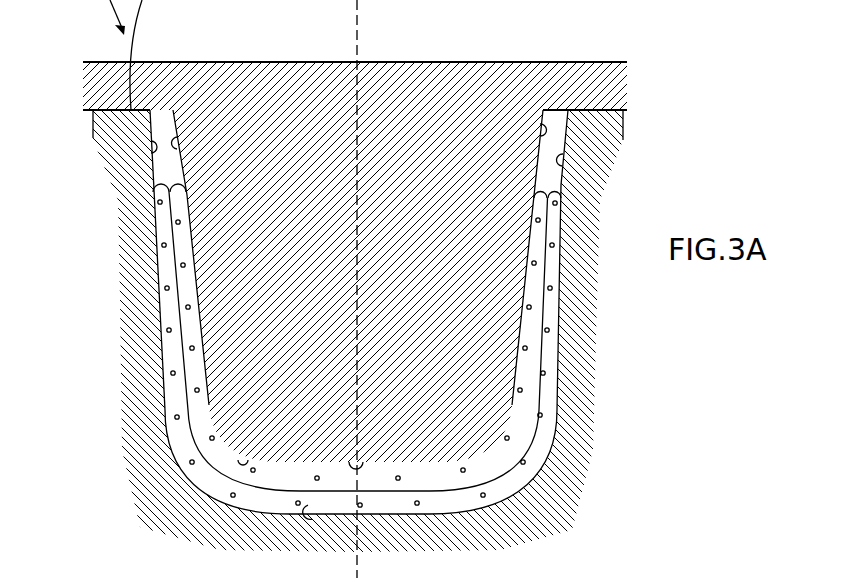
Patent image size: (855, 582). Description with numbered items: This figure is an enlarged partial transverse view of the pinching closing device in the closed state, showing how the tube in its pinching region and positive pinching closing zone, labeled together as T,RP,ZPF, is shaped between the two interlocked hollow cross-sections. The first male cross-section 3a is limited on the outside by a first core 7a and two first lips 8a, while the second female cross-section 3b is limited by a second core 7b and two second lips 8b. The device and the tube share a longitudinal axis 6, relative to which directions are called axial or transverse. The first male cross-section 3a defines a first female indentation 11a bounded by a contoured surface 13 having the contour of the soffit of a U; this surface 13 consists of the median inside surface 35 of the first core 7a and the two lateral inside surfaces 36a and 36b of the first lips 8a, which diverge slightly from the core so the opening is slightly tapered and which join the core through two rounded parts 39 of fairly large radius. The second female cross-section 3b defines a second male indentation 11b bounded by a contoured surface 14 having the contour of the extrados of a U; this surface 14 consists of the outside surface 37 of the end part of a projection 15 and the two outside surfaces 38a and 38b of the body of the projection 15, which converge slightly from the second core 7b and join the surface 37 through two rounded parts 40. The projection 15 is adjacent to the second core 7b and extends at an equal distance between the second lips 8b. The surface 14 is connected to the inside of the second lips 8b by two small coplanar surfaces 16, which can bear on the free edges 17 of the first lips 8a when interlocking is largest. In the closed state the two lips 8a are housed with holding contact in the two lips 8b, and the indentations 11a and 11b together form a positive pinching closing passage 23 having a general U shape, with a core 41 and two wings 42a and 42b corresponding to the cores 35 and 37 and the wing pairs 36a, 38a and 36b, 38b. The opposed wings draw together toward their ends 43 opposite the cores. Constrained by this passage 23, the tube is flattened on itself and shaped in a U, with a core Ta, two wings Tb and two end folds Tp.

The first male cross-section 3a is at (187, 502).
The second female cross-section 3b is at (355, 262).
The longitudinal axis 6 is at (355, 262).
The first core 7a is at (338, 537).
The second core 7b is at (431, 100).
The first lips 8a is at (148, 382).
The second lips 8b is at (115, 75).
The first female indentation 11a is at (220, 507).
The second male indentation 11b is at (340, 423).
The contoured surface 13 is at (310, 510).
The contoured surface 14 is at (252, 458).
The projection 15 is at (338, 289).
The small surfaces 16 is at (157, 110).
The free edges 17 is at (598, 110).
The positive pinching closing passage 23 is at (550, 305).
The inside surface of the first core 35 is at (352, 480).
The inside surface of first lip 36a is at (150, 150).
The inside surface of first lip 36b is at (563, 163).
The outside surface of the projection end part 37 is at (370, 462).
The outside surface of projection body 38a is at (175, 142).
The outside surface of projection body 38b is at (541, 132).
The rounded parts 39 is at (183, 473).
The rounded parts 40 is at (218, 443).
The core of the pinching passage 41 is at (350, 480).
The wing of the pinching passage 42a is at (165, 313).
The wing of the pinching passage 42b is at (553, 322).
The ends of the wings 43 is at (153, 185).
The core of the tube Ta is at (268, 505).
The wings of the tube Tb is at (157, 230).
The end folds of the tube Tp is at (187, 176).
The tube, pinching region, positive pinching closing zone T,RP,ZPF is at (158, 327).